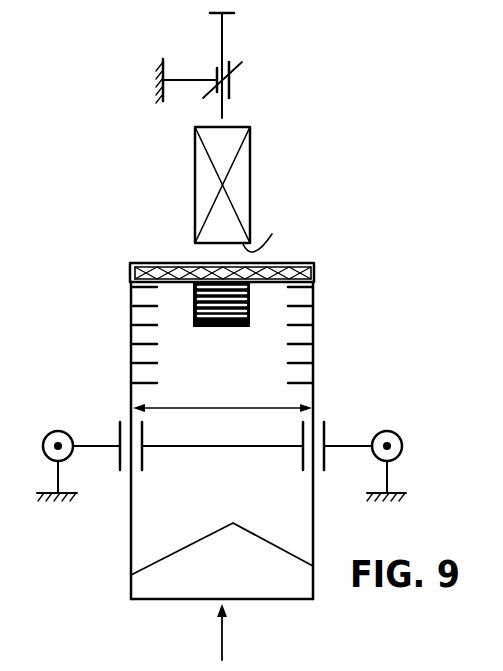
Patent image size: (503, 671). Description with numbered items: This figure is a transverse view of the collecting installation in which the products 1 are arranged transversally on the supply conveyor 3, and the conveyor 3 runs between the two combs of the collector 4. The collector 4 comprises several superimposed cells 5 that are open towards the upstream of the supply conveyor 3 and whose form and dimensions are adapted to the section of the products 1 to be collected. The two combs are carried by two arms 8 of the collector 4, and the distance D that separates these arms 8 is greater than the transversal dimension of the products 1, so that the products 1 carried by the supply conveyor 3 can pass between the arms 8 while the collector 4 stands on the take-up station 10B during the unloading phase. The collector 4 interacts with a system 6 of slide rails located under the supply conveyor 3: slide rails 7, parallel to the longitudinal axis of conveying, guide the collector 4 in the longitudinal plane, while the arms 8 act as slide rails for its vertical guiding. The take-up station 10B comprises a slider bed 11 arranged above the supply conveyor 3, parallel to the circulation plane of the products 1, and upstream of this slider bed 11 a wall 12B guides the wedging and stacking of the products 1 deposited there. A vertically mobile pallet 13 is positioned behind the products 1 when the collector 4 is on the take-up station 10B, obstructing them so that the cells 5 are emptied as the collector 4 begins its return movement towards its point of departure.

The products 1 is at (180, 273).
The supply conveyor 3 is at (228, 328).
The collector 4 is at (122, 305).
The cells 5 is at (143, 352).
The system of slide rails 6 is at (345, 424).
The slide rails 7 is at (57, 444).
The arms 8 is at (222, 537).
The take-up station 10B is at (258, 145).
The slider bed 11 is at (267, 232).
The wall 12B is at (201, 166).
The pallet 13 is at (241, 41).
The distance between the two arms D is at (222, 398).